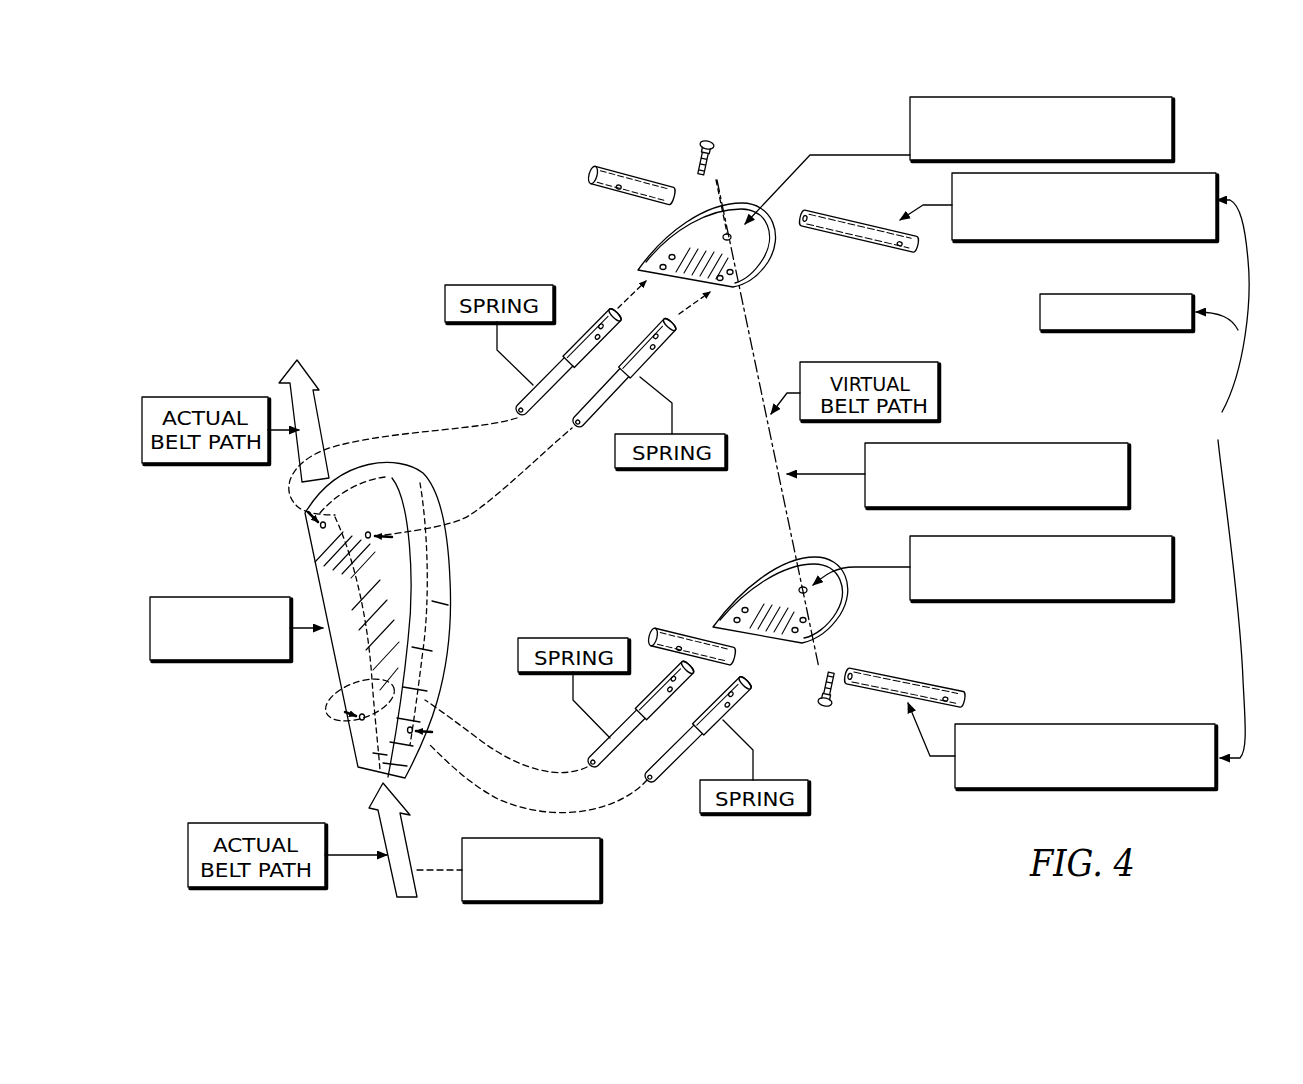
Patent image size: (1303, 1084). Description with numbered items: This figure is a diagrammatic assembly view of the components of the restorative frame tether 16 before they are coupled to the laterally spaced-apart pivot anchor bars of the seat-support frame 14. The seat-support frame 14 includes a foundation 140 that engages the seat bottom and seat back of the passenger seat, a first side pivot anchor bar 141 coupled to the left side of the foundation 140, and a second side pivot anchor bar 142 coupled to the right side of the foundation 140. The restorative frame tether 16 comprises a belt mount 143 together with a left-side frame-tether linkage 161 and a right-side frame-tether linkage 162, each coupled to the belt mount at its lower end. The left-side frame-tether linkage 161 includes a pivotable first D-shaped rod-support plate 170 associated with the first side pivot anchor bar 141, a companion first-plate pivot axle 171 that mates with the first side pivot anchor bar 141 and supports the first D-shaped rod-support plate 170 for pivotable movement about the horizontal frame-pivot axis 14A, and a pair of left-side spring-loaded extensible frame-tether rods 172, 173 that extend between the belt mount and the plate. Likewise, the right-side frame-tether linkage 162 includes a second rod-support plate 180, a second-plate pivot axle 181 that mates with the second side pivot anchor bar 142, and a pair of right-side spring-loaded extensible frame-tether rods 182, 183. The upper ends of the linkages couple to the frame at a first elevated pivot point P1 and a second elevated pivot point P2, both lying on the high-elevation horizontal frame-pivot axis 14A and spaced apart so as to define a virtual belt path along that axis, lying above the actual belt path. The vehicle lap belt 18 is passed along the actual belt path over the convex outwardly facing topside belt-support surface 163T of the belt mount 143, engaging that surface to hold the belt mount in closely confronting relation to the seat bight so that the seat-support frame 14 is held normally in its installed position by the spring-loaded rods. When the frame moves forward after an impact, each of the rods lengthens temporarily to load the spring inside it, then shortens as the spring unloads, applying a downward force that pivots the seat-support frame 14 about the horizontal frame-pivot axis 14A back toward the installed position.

The restorative frame tether 16 is at (237, 330).
The right-side frame-tether linkage 162 is at (513, 237).
The left-side frame-tether linkage 161 is at (862, 767).
The second-plate pivot axle 181 is at (720, 163).
The first-plate pivot axle 171 is at (833, 697).
The second rod-support plate 180 is at (784, 243).
The first D-shaped rod-support plate 170 is at (851, 598).
The spring-loaded extensible frame-tether rod 183 is at (603, 303).
The spring-loaded extensible frame-tether rod 182 is at (668, 367).
The spring-loaded extensible frame-tether rod 173 is at (670, 662).
The spring-loaded extensible frame-tether rod 172 is at (743, 712).
The second side pivot anchor bar 142 is at (1188, 173).
The first side pivot anchor bar 141 is at (1170, 724).
The foundation 140 is at (1040, 310).
The seat-support frame 14 is at (1222, 479).
The horizontal frame-pivot axis 14A is at (1070, 443).
The first elevated pivot point P1 is at (1128, 536).
The second elevated pivot point P2 is at (910, 123).
The convex outwardly facing topside belt-support surface 163T is at (450, 563).
The belt mount 143 is at (202, 597).
The passenger-seat lap belt 18 is at (600, 864).